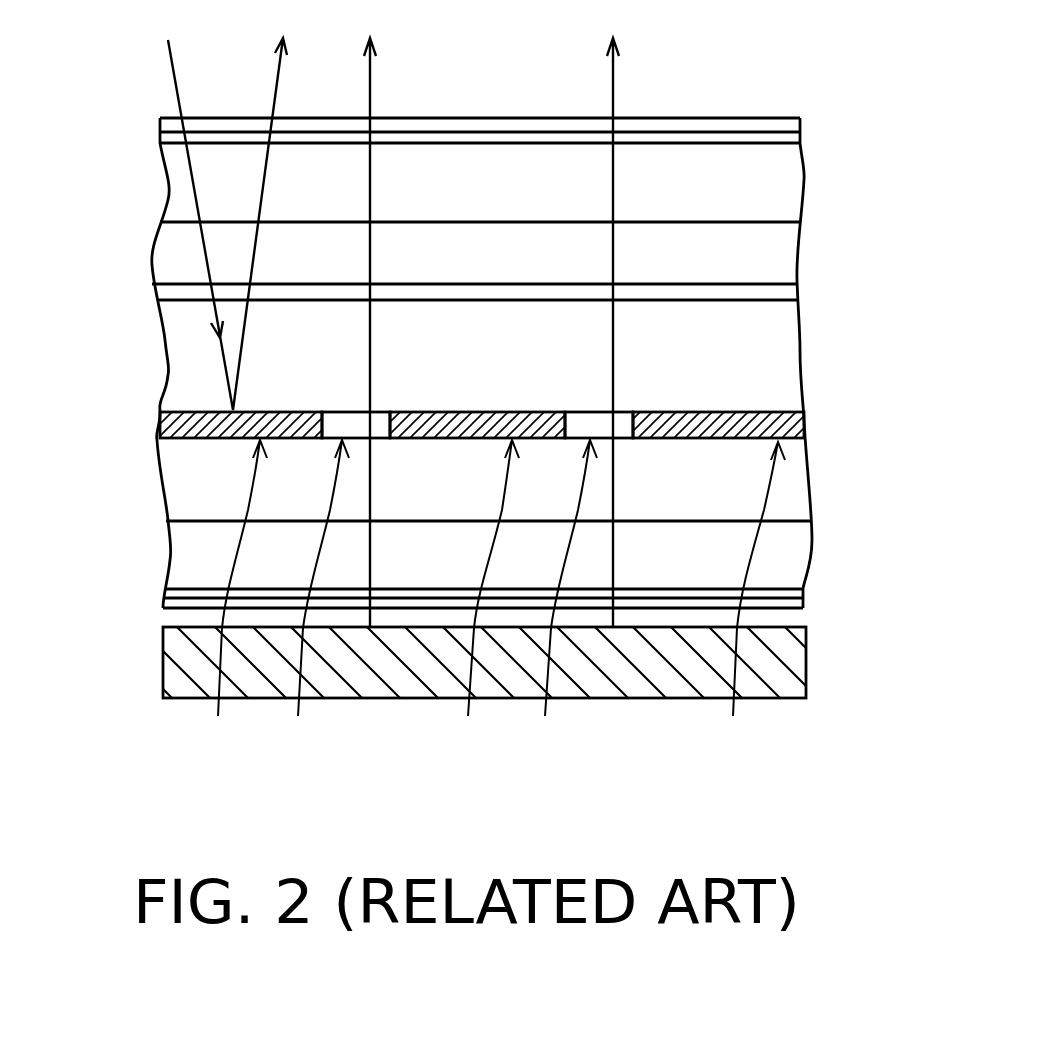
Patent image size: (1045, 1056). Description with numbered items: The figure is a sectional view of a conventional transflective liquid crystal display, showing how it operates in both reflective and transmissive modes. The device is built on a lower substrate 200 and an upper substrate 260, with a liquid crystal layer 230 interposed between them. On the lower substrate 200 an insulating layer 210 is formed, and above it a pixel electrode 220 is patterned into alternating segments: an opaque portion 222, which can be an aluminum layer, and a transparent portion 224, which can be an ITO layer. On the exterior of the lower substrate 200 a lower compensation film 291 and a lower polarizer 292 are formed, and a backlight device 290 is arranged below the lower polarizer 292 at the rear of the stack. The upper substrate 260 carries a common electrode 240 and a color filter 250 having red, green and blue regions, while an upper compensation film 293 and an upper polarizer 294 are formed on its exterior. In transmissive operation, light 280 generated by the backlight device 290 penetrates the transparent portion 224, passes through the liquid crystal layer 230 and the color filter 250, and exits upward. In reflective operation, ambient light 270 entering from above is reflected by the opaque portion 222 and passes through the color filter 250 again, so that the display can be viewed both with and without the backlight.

The lower substrate 200 is at (798, 558).
The insulating layer 210 is at (792, 488).
The pixel electrode 220 is at (804, 425).
The opaque portion 222 is at (488, 595).
The transparent portion 224 is at (545, 698).
The liquid crystal layer 230 is at (792, 340).
The common electrode 240 is at (780, 289).
The color filter 250 is at (778, 256).
The upper substrate 260 is at (792, 178).
The ambient light 270 is at (172, 62).
The light 280 is at (650, 73).
The backlight device 290 is at (172, 663).
The lower compensation film 291 is at (803, 593).
The lower polarizer 292 is at (803, 604).
The upper compensation film 293 is at (800, 133).
The upper polarizer 294 is at (800, 118).